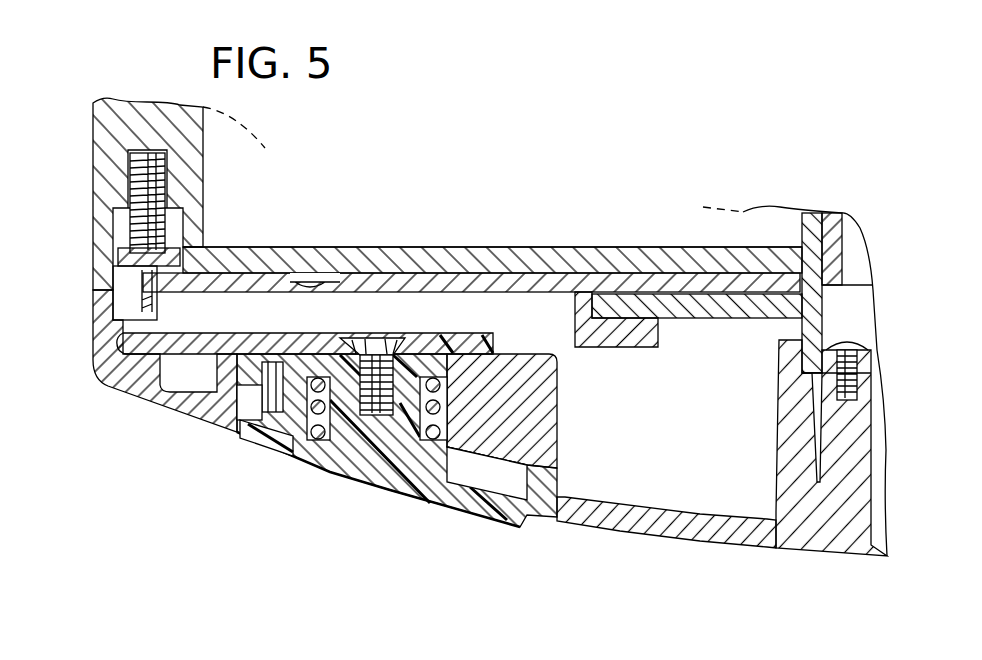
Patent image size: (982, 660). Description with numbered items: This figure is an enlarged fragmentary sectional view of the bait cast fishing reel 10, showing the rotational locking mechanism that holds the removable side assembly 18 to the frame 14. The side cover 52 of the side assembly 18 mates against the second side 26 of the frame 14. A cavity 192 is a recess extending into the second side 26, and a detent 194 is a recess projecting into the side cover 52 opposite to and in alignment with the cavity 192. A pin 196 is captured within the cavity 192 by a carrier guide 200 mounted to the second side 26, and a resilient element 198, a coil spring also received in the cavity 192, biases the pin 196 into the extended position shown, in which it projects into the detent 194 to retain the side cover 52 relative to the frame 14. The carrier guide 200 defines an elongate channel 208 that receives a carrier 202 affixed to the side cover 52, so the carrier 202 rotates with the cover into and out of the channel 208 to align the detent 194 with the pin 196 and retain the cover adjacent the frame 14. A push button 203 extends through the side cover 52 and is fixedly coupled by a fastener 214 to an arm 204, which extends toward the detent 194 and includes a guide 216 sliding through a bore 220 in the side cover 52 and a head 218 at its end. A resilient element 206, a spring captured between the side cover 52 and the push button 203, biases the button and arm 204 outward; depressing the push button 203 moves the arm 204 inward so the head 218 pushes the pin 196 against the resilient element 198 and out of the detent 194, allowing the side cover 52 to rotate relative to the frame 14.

The bait cast fishing reel 10 is at (603, 195).
The frame 14 is at (433, 243).
The removable side assembly 18 is at (833, 558).
The second side 26 is at (377, 247).
The side cover 52 is at (697, 545).
The cavity 192 is at (118, 212).
The detent 194 is at (110, 303).
The pin 196 is at (190, 333).
The resilient element 198 is at (157, 188).
The carrier guide 200 is at (640, 347).
The carrier 202 is at (685, 318).
The push button 203 is at (467, 517).
The arm 204 is at (467, 336).
The resilient element 206 is at (362, 462).
The channel 208 is at (641, 271).
The fastener 214 is at (360, 338).
The guide 216 is at (313, 435).
The head 218 is at (88, 392).
The bore 220 is at (240, 390).